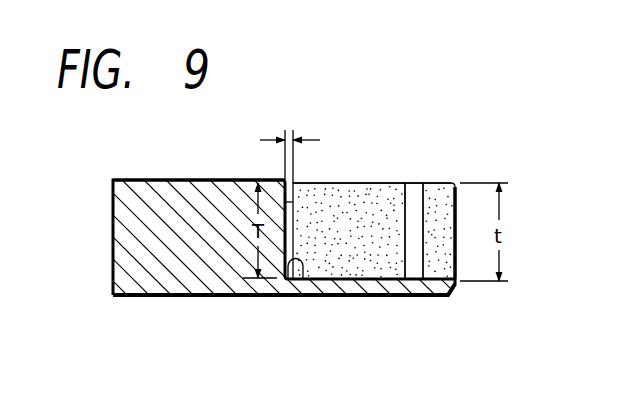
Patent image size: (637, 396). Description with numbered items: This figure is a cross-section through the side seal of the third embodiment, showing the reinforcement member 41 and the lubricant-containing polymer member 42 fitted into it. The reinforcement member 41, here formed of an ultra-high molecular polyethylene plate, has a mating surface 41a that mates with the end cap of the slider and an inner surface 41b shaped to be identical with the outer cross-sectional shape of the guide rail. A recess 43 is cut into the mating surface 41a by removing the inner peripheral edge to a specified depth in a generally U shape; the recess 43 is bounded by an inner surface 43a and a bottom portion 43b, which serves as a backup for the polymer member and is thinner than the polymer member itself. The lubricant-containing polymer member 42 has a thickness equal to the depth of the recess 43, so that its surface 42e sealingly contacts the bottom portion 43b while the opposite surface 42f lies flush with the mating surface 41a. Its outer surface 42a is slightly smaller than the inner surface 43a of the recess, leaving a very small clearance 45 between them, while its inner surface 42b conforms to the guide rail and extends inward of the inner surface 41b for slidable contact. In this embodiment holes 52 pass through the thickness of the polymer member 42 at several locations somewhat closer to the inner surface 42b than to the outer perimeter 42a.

The reinforcement member 41 is at (206, 293).
The mating surface of the reinforcement member 41a is at (136, 180).
The inner surface of the reinforcement member 41b is at (450, 293).
The lubricant-containing polymer member 42 is at (338, 183).
The outer surface of the polymer member 42a is at (285, 202).
The inner surface of the polymer member 42b is at (457, 205).
The surface of the polymer member 42e is at (425, 294).
The opposite surface of the polymer member 42f is at (376, 183).
The recess 43 is at (375, 267).
The inner surface of the recess 43a is at (294, 293).
The bottom portion of the recess 43b is at (380, 293).
The clearance 45 is at (290, 143).
The holes 52 is at (412, 183).